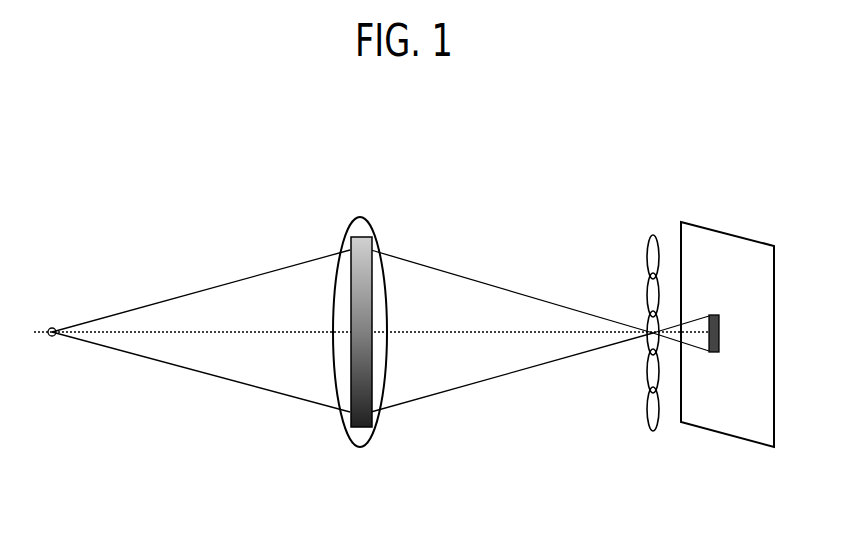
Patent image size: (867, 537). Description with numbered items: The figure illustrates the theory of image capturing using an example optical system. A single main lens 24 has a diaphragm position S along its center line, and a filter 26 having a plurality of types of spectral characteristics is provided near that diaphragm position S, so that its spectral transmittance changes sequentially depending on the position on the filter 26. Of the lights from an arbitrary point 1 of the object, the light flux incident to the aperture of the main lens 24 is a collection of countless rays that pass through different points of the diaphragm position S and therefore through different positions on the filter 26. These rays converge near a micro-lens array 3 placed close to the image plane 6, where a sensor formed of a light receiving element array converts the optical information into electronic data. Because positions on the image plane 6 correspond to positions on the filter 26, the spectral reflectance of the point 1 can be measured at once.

The point of the object 1 is at (56, 328).
The micro-lens array 3 is at (648, 262).
The image plane 6 is at (742, 237).
The main lens 24 is at (383, 248).
The filter 26 is at (348, 314).
The diaphragm position S is at (360, 210).